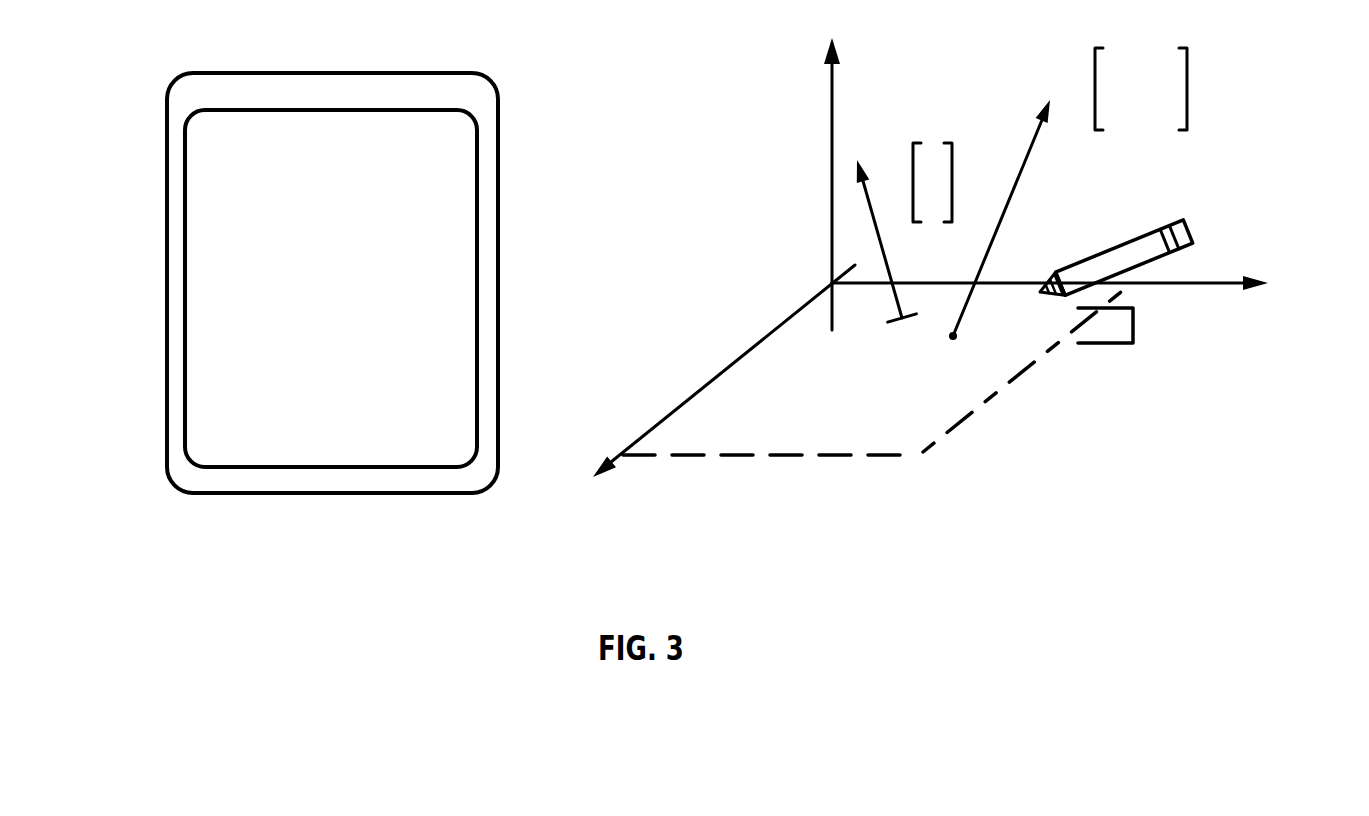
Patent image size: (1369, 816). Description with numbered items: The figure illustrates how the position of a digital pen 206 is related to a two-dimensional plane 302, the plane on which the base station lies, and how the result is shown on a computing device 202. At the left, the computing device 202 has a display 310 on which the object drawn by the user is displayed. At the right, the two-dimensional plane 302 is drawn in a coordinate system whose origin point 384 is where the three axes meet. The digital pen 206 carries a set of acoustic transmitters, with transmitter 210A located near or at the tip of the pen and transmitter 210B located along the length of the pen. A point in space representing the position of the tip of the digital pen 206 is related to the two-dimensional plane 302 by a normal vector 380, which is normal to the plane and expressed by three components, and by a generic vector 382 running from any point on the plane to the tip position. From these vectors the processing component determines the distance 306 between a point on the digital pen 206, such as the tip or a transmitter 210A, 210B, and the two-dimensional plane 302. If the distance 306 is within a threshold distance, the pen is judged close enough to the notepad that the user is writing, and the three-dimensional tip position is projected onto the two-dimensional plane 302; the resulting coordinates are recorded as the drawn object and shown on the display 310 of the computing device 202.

The computing device 202 is at (332, 73).
The display 310 is at (212, 275).
The origin point 384 is at (959, 243).
The two-dimensional plane 302 is at (877, 369).
The normal vector 380 is at (947, 140).
The generic vector 382 is at (1103, 48).
The digital pen 206 is at (1199, 197).
The transmitter 210A is at (1042, 283).
The transmitter 210B is at (1163, 232).
The distance 306 is at (1116, 324).